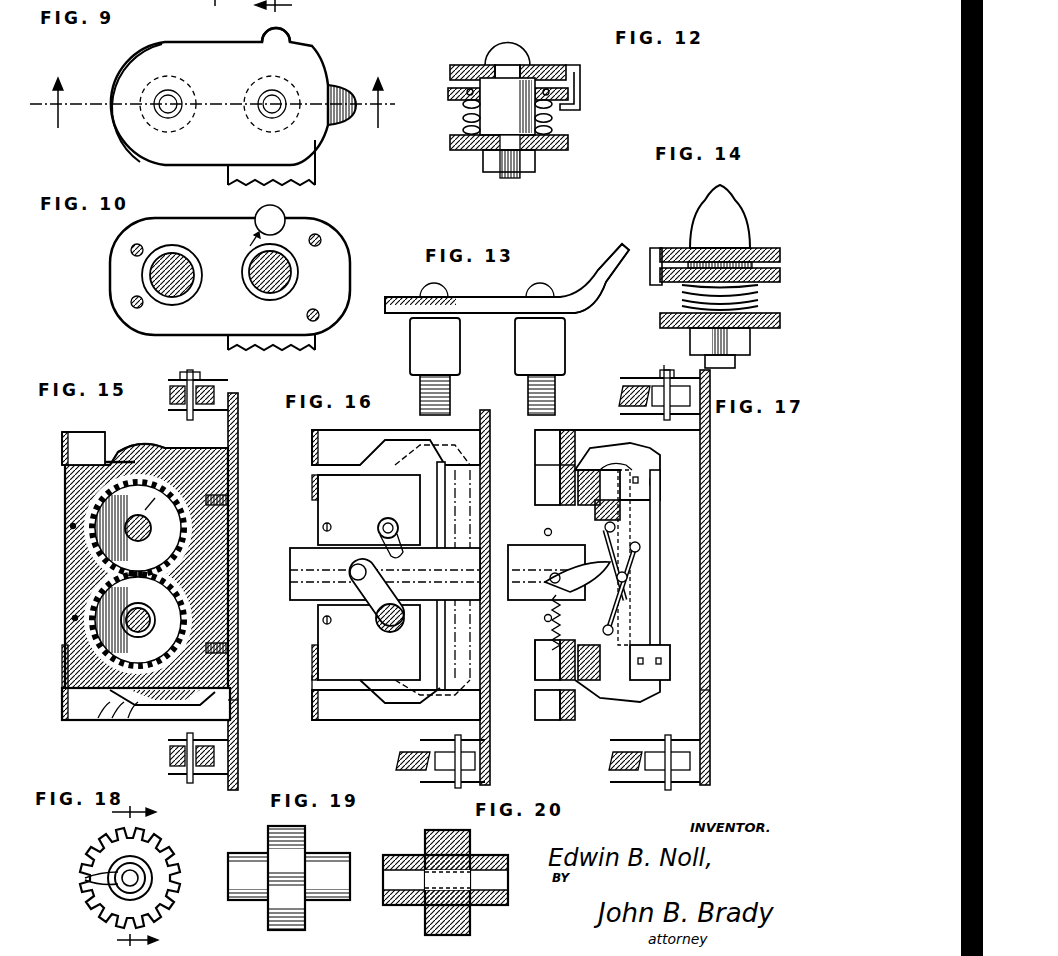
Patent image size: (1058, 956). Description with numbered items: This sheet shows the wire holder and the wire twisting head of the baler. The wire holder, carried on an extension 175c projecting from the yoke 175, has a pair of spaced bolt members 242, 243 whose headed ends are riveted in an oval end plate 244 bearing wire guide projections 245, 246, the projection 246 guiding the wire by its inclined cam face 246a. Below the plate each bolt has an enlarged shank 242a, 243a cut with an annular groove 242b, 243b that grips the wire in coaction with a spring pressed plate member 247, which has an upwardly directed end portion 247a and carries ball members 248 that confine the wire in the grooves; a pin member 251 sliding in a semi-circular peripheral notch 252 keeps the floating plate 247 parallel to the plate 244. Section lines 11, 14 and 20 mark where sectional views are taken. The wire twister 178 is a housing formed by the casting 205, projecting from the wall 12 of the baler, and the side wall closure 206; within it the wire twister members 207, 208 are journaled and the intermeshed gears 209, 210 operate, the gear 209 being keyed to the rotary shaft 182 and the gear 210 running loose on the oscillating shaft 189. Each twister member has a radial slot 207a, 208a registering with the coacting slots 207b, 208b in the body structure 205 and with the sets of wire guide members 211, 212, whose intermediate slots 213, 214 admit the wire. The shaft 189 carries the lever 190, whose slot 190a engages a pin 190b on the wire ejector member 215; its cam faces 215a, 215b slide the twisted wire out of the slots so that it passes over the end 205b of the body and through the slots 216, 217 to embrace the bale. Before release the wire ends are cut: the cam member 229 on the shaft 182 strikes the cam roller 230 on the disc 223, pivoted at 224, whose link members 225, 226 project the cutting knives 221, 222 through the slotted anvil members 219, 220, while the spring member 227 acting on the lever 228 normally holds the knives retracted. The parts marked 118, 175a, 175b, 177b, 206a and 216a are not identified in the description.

In FIG. 9, the section line 11— 11 is at (218, 103).
In FIG. 9, the wall of the baler 12 is at (273, 14).
In FIG. 15, the wall of the baler 12 is at (238, 400).
In FIG. 17, the wall of the baler 12 is at (712, 502).
In FIG. 9, the section line 14— 14 is at (208, 11).
In FIG. 18, the section line 20— 20 is at (118, 877).
In FIG. 15, the bracket 118 is at (66, 430).
In FIG. 9, the yoke 175 is at (318, 160).
In FIG. 10, the yoke 175 is at (271, 342).
In FIG. 17, the yoke 175 is at (618, 394).
In FIG. 15, the bracket bolt 175a is at (228, 384).
In FIG. 17, the bracket bolt 175a is at (661, 358).
In FIG. 16, the lower bracket 175b is at (400, 760).
In FIG. 17, the lower bracket 175b is at (712, 755).
In FIG. 12, the extension 175c is at (572, 150).
In FIG. 14, the extension 175c is at (782, 319).
In FIG. 15, the lower clamp bracket 177b is at (168, 764).
In FIG. 17, the wire twister 178 is at (616, 430).
In FIG. 15, the shaft 182 is at (122, 530).
In FIG. 15, the shaft 189 is at (122, 614).
In FIG. 16, the shaft 189 is at (386, 628).
In FIG. 16, the lever 190 is at (346, 622).
In FIG. 16, the slot 190a is at (331, 626).
In FIG. 16, the pin 190b is at (350, 592).
In FIG. 15, the casting 205 is at (70, 496).
In FIG. 15, the end of body structure 205b is at (140, 718).
In FIG. 16, the side wall coacting closure 206 is at (326, 500).
In FIG. 15, the housing top edge 206a is at (168, 452).
In FIG. 15, the wire twister member 207 is at (150, 450).
In FIG. 18, the wire twister member 207 is at (160, 852).
In FIG. 19, the wire twister member 207 is at (300, 852).
In FIG. 20, the wire twister member 207 is at (446, 836).
In FIG. 15, the radially extending slot 207a is at (136, 448).
In FIG. 18, the radially extending slot 207a is at (106, 886).
In FIG. 19, the radially extending slot 207a is at (276, 900).
In FIG. 20, the radially extending slot 207a is at (428, 916).
In FIG. 15, the coacting slot 207b is at (116, 450).
In FIG. 15, the wire twister member 208 is at (130, 716).
In FIG. 15, the radially extending slot 208a is at (112, 718).
In FIG. 15, the coacting slot 208b is at (100, 718).
In FIG. 15, the gear 209 is at (150, 515).
In FIG. 15, the gear 210 is at (118, 630).
In FIG. 15, the set of wire guide members 211 is at (62, 470).
In FIG. 16, the set of wire guide members 211 is at (312, 450).
In FIG. 17, the set of wire guide members 211 is at (535, 460).
In FIG. 15, the set of wire guide members 212 is at (62, 674).
In FIG. 16, the set of wire guide members 212 is at (318, 700).
In FIG. 17, the set of wire guide members 212 is at (538, 652).
In FIG. 15, the intermediate slot 213 is at (110, 447).
In FIG. 16, the intermediate slot 213 is at (396, 447).
In FIG. 17, the intermediate slot 213 is at (536, 462).
In FIG. 15, the intermediate slot 214 is at (70, 712).
In FIG. 16, the intermediate slot 214 is at (340, 720).
In FIG. 17, the intermediate slot 214 is at (538, 692).
In FIG. 16, the wire ejector member 215 is at (395, 440).
In FIG. 17, the wire ejector member 215 is at (520, 548).
In FIG. 16, the cam face 215a is at (456, 580).
In FIG. 16, the cam face 215b is at (382, 700).
In FIG. 15, the slot 216 is at (238, 460).
In FIG. 16, the slot 216 is at (454, 576).
In FIG. 17, the slot 216 is at (710, 452).
In FIG. 16, the block edge 216a is at (320, 497).
In FIG. 15, the slot 217 is at (238, 706).
In FIG. 16, the slot 217 is at (312, 706).
In FIG. 17, the slot 217 is at (712, 700).
In FIG. 17, the anvil member 219 is at (622, 454).
In FIG. 17, the anvil member 220 is at (634, 692).
In FIG. 17, the cutting knife 221 is at (666, 480).
In FIG. 17, the cutting knife 222 is at (672, 662).
In FIG. 17, the angularly shiftable disc 223 is at (626, 572).
In FIG. 17, the pivot 224 is at (627, 580).
In FIG. 17, the link member 225 is at (566, 548).
In FIG. 17, the link member 226 is at (613, 628).
In FIG. 17, the spring member 227 is at (550, 578).
In FIG. 17, the lever 228 is at (562, 572).
In FIG. 16, the cam member 229 is at (405, 531).
In FIG. 17, the cam member 229 is at (614, 530).
In FIG. 17, the cam roller 230 is at (640, 548).
In FIG. 12, the bolt member 242 is at (556, 40).
In FIG. 13, the bolt member 242 is at (460, 382).
In FIG. 10, the enlarged shank 242a is at (166, 292).
In FIG. 13, the enlarged shank 242a is at (420, 340).
In FIG. 10, the annular groove 242b is at (148, 278).
In FIG. 12, the bolt member 243 is at (604, 89).
In FIG. 13, the bolt member 243 is at (532, 400).
In FIG. 12, the enlarged shank 243a is at (560, 118).
In FIG. 10, the enlarged shank 243a is at (276, 254).
In FIG. 13, the enlarged shank 243a is at (546, 350).
In FIG. 12, the annular groove 243b is at (530, 70).
In FIG. 10, the annular groove 243b is at (296, 276).
In FIG. 9, the end plate 244 is at (234, 88).
In FIG. 12, the end plate 244 is at (466, 66).
In FIG. 13, the end plate 244 is at (488, 304).
In FIG. 14, the end plate 244 is at (782, 256).
In FIG. 9, the wire guide projection 245 is at (291, 40).
In FIG. 9, the wire guide projection 246 is at (336, 98).
In FIG. 13, the wire guide projection 246 is at (606, 268).
In FIG. 14, the wire guide projection 246 is at (746, 216).
In FIG. 13, the inclined cam face 246a is at (600, 286).
In FIG. 12, the spring pressed plate member 247 is at (446, 108).
In FIG. 10, the spring pressed plate member 247 is at (200, 228).
In FIG. 14, the spring pressed plate member 247 is at (782, 278).
In FIG. 9, the upwardly directed end portion 247a is at (110, 75).
In FIG. 12, the ball members 248 is at (582, 84).
In FIG. 10, the ball members 248 is at (132, 252).
In FIG. 12, the pin member 251 is at (580, 106).
In FIG. 10, the pin member 251 is at (282, 220).
In FIG. 10, the semi-circular peripheral notch 252 is at (237, 243).